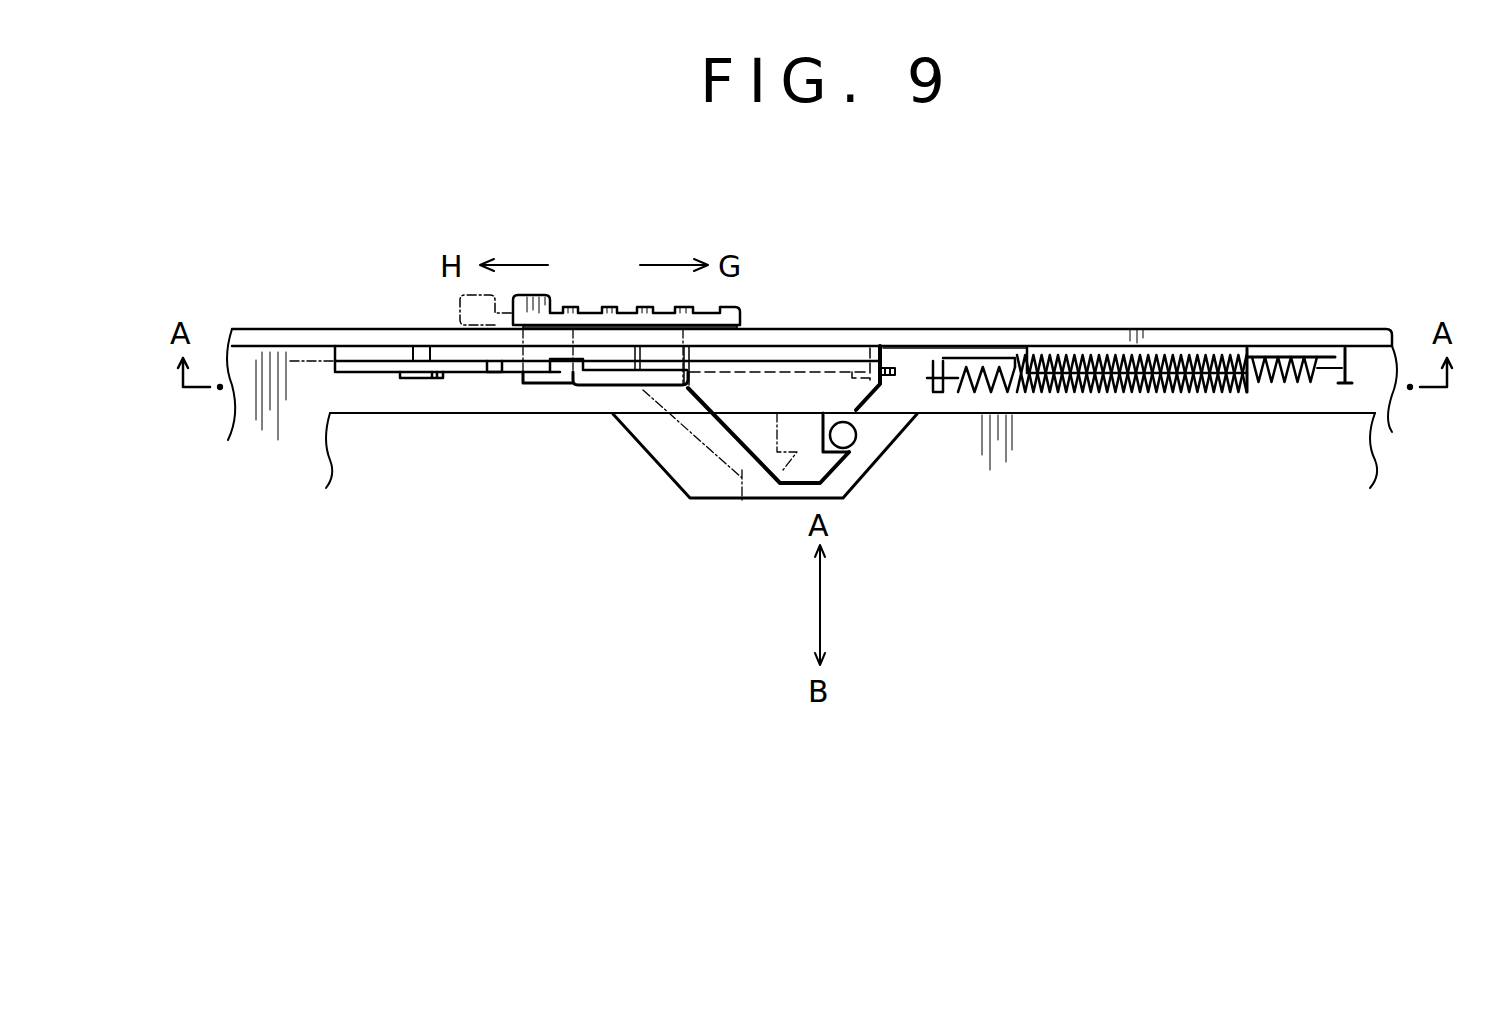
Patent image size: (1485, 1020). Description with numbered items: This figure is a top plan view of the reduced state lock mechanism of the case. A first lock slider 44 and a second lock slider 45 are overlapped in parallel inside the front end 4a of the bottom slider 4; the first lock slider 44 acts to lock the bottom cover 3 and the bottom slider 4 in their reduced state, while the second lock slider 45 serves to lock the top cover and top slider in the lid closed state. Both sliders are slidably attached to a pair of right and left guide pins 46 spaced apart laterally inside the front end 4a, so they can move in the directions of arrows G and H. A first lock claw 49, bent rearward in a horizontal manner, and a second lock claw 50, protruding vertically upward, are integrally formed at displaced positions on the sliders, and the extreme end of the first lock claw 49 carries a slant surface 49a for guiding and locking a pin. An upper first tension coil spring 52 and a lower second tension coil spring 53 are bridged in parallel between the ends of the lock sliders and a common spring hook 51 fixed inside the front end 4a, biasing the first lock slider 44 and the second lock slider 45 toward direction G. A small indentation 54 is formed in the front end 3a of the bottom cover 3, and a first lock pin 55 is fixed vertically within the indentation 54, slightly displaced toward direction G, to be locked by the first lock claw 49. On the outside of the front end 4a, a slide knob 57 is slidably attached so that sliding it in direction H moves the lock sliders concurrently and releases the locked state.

The bottom cover 3 is at (1030, 470).
The front end of the bottom cover 3a is at (1128, 410).
The bottom slider 4 is at (923, 318).
The front end of the bottom slider 4a is at (995, 338).
The first lock slider 44 is at (503, 357).
The second lock slider 45 is at (470, 373).
The guide pins 46 is at (417, 379).
The first lock claw 49 is at (790, 484).
The slant surface 49a is at (838, 470).
The second lock claw 50 is at (525, 375).
The spring hook 51 is at (1268, 345).
The first tension coil spring 52 is at (1296, 378).
The second tension coil spring 53 is at (1185, 386).
The small indentation 54 is at (660, 455).
The first lock pin 55 is at (850, 440).
The slide knob 57 is at (590, 312).